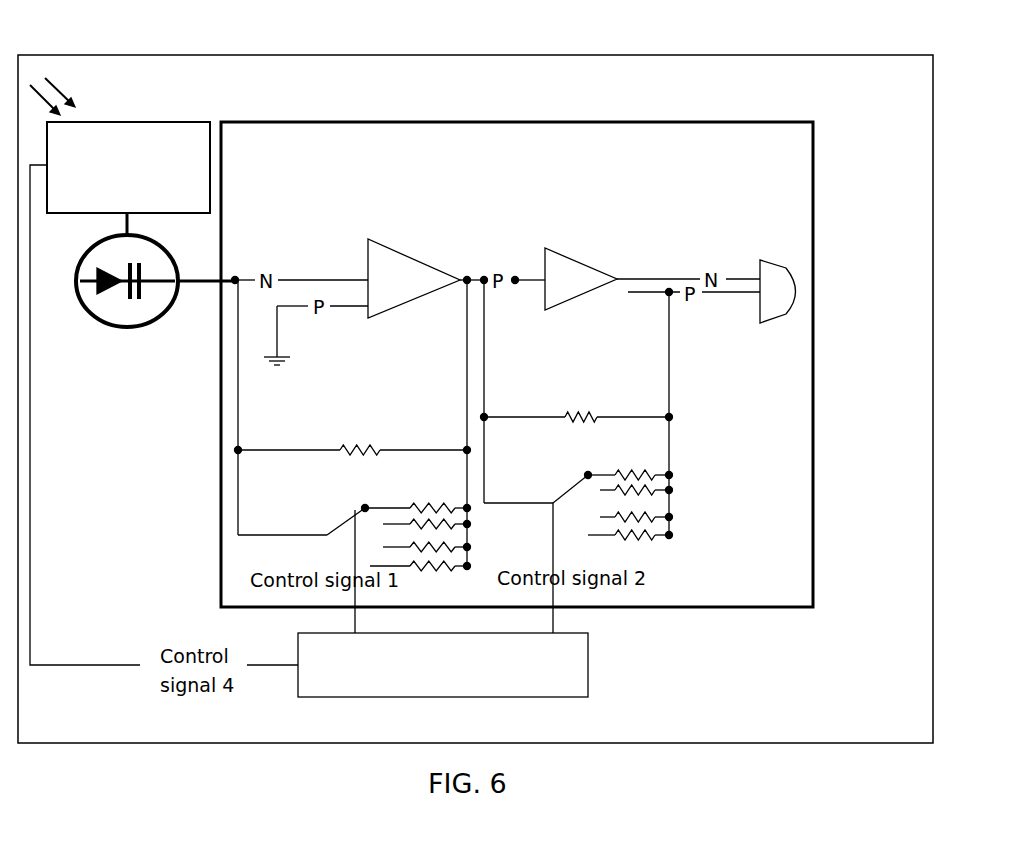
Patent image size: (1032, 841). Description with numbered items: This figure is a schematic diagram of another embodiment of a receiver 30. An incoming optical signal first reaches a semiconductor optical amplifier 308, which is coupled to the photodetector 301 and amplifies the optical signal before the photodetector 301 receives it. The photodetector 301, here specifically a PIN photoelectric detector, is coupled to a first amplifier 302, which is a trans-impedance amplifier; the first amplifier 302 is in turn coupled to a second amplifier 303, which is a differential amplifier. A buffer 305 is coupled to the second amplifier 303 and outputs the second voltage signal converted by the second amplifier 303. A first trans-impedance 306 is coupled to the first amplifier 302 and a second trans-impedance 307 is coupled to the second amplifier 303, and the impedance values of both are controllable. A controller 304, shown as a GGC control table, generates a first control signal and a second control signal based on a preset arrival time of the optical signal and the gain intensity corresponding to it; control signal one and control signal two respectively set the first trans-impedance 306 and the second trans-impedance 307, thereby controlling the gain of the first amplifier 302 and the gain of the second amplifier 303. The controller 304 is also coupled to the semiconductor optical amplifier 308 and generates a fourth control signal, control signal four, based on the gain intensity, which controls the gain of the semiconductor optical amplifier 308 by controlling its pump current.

The receiver 30 is at (550, 55).
The photodetector 301 is at (165, 246).
The first amplifier 302 is at (398, 250).
The second amplifier 303 is at (578, 262).
The controller 304 is at (592, 662).
The buffer 305 is at (781, 262).
The first trans-impedance 306 is at (360, 442).
The second trans-impedance 307 is at (580, 408).
The semiconductor optical amplifier 308 is at (124, 122).